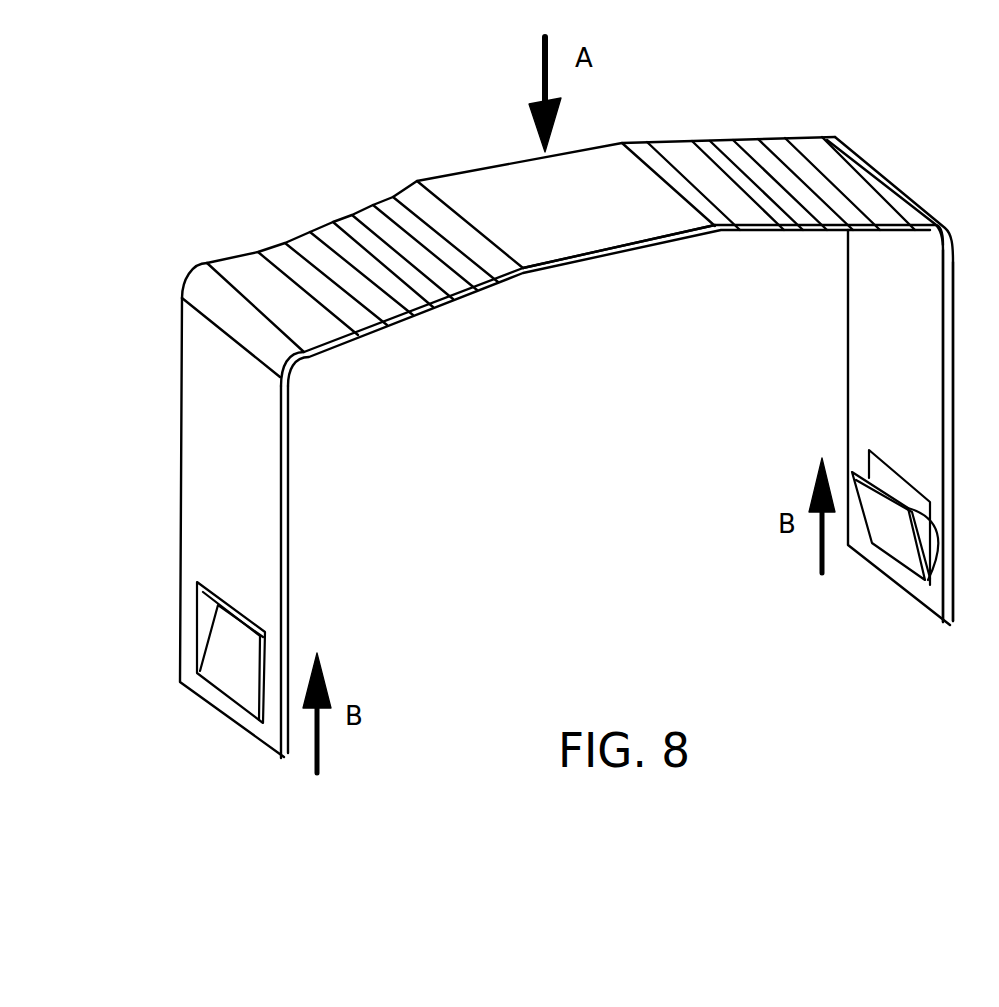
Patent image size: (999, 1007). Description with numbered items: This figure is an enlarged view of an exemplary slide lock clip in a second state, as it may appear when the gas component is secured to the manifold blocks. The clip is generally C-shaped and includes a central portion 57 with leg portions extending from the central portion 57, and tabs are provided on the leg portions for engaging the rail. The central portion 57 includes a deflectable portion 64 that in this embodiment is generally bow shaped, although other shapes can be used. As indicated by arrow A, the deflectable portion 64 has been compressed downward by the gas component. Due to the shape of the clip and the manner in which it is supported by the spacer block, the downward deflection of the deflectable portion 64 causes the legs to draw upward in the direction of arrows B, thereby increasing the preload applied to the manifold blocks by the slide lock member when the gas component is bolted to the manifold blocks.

The central portion 57 is at (383, 217).
The deflectable portion 64 is at (793, 253).